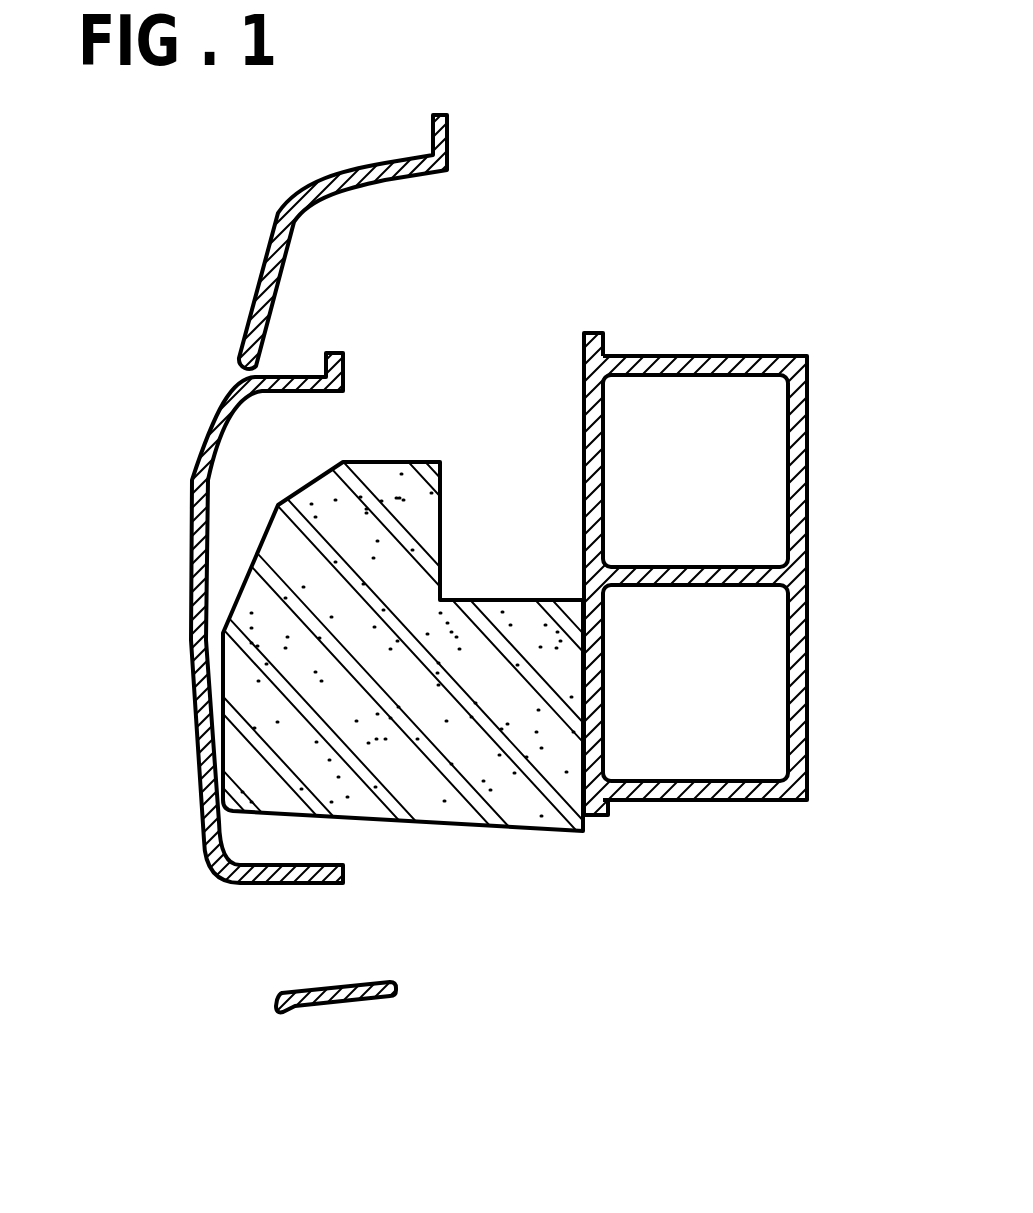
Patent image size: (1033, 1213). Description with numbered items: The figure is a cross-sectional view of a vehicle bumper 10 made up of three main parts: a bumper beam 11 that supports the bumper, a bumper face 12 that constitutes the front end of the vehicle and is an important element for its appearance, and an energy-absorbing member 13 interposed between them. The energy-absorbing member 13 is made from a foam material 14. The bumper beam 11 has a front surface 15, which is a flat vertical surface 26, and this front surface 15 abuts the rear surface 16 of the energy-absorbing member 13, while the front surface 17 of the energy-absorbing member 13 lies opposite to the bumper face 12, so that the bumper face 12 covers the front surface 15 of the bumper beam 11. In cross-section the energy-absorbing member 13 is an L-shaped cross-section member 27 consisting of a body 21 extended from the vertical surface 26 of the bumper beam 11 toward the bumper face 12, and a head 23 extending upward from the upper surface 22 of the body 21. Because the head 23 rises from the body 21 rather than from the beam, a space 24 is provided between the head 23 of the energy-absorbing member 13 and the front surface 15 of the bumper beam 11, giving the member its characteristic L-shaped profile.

The vehicle bumper 10 is at (580, 936).
The bumper beam 11 is at (767, 365).
The bumper face 12 is at (197, 433).
The energy-absorbing member 13 is at (516, 849).
The foam material 14 is at (386, 634).
The front surface of the bumper beam 15 is at (583, 403).
The rear surface of the energy-absorbing member 16 is at (590, 688).
The front surface of the energy-absorbing member 17 is at (220, 750).
The body 21 is at (425, 800).
The upper surface of the body 22 is at (540, 600).
The head 23 is at (343, 522).
The space 24 is at (503, 512).
The flat vertical surface 26 is at (647, 574).
The L-shaped cross-section member 27 is at (386, 634).